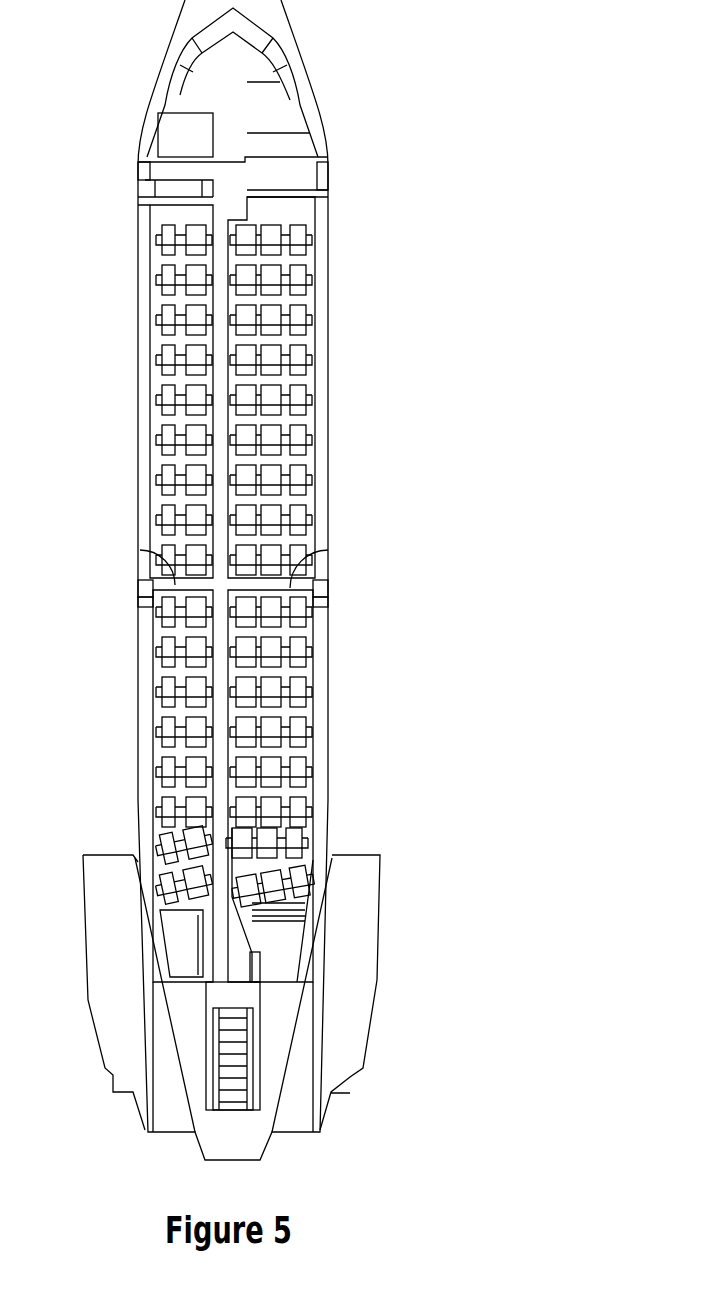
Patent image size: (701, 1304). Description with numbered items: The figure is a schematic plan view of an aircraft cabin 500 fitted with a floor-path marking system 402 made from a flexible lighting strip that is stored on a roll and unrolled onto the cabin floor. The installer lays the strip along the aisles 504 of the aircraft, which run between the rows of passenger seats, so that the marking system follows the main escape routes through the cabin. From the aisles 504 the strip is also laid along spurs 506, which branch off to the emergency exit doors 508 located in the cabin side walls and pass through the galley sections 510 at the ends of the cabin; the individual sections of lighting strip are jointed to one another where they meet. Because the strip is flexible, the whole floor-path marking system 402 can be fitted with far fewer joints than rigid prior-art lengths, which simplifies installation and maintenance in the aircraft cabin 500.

The aircraft cabin 500 is at (128, 441).
The floor-path marking system 402 is at (182, 500).
The aisles 504 is at (218, 404).
The spurs 506 is at (306, 183).
The emergency exit doors 508 is at (140, 172).
The galley sections 510 is at (290, 168).